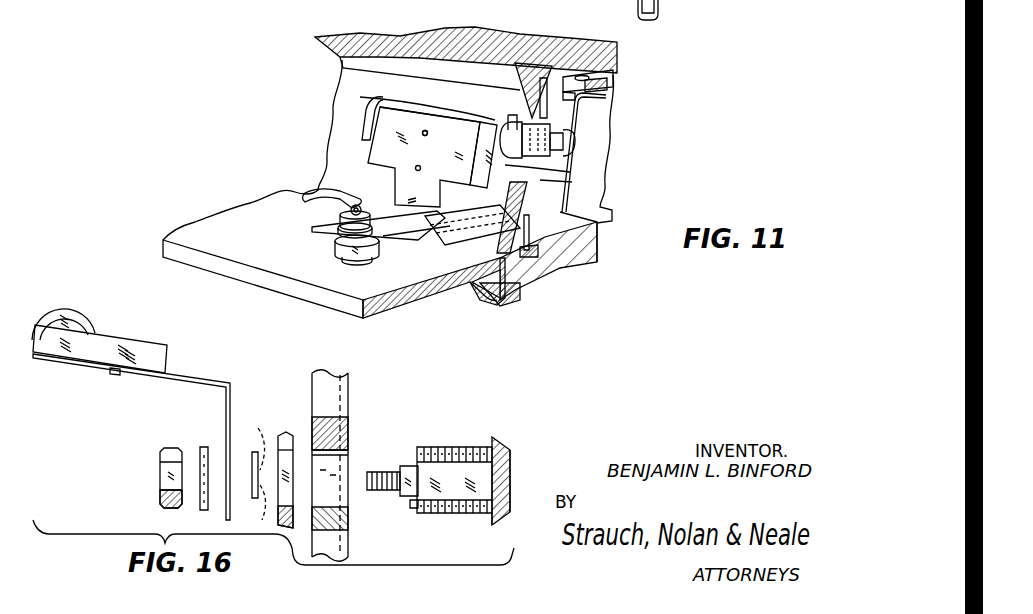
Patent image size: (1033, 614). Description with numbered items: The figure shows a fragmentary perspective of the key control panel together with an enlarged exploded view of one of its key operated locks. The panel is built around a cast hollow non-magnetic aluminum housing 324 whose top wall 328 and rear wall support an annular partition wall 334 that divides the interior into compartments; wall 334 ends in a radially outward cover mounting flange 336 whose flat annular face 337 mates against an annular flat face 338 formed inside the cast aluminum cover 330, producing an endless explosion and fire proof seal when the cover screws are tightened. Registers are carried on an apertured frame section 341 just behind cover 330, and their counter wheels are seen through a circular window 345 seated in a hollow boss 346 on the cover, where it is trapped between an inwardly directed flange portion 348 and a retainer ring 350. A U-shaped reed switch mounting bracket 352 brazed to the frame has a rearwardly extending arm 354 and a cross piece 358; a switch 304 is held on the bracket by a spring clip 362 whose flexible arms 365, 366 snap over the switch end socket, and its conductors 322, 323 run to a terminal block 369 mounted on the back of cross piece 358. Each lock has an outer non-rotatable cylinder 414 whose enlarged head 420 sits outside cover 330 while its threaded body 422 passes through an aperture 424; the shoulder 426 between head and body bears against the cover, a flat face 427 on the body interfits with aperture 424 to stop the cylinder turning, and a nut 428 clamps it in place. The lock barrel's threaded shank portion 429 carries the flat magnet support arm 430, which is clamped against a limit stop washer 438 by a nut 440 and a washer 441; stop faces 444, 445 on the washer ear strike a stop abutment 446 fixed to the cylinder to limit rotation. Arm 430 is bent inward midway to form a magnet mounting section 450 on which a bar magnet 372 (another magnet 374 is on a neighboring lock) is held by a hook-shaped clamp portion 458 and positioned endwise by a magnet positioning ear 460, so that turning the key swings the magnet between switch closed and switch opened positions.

In FIG. 11, the switch 304 is at (470, 58).
In FIG. 11, the conductor 322 is at (560, 138).
In FIG. 11, the conductor 323 is at (572, 152).
In FIG. 11, the housing 324 is at (533, 42).
In FIG. 11, the top wall 328 is at (315, 45).
In FIG. 11, the cover 330 is at (445, 300).
In FIG. 16, the cover 330 is at (320, 385).
In FIG. 11, the annular partition wall 334 is at (528, 208).
In FIG. 11, the cover mounting flange 336 is at (493, 233).
In FIG. 11, the annular face 337 is at (512, 232).
In FIG. 11, the annular flat face 338 is at (525, 243).
In FIG. 11, the frame section 341 is at (590, 230).
In FIG. 11, the window 345 is at (585, 258).
In FIG. 11, the boss 346 is at (500, 308).
In FIG. 11, the flange portion 348 is at (538, 290).
In FIG. 11, the retainer ring 350 is at (585, 248).
In FIG. 11, the reed switch mounting bracket 352 is at (583, 116).
In FIG. 11, the arm 354 is at (572, 182).
In FIG. 11, the bracket cross piece 358 is at (600, 93).
In FIG. 11, the spring clip 362 is at (570, 172).
In FIG. 11, the flexible arm 365 is at (527, 115).
In FIG. 11, the flexible arm 366 is at (485, 158).
In FIG. 11, the terminal block 369 is at (610, 82).
In FIG. 16, the bar magnet 372 is at (62, 313).
In FIG. 11, the bar magnet 374 is at (490, 131).
In FIG. 16, the cylinder 414 is at (482, 445).
In FIG. 16, the head 420 is at (505, 505).
In FIG. 11, the body 422 is at (363, 250).
In FIG. 16, the body 422 is at (468, 455).
In FIG. 16, the aperture 424 is at (346, 456).
In FIG. 16, the shoulder 426 is at (495, 518).
In FIG. 11, the flat face 427 is at (347, 243).
In FIG. 16, the flat face 427 is at (432, 480).
In FIG. 11, the nut 428 is at (275, 315).
In FIG. 11, the shank portion 429 is at (313, 207).
In FIG. 16, the shank portion 429 is at (385, 472).
In FIG. 11, the magnet support arm 430 is at (362, 155).
In FIG. 16, the magnet support arm 430 is at (82, 365).
In FIG. 16, the limit stop washer 438 is at (287, 432).
In FIG. 11, the nut 440 is at (293, 205).
In FIG. 16, the nut 440 is at (162, 450).
In FIG. 16, the washer 441 is at (206, 445).
In FIG. 16, the stop face 444 is at (250, 470).
In FIG. 16, the stop face 445 is at (263, 509).
In FIG. 16, the stop abutment 446 is at (412, 508).
In FIG. 11, the magnet mounting section 450 is at (403, 186).
In FIG. 16, the magnet mounting section 450 is at (187, 378).
In FIG. 16, the clamp portion 458 is at (88, 318).
In FIG. 11, the magnet positioning ear 460 is at (518, 175).
In FIG. 16, the magnet positioning ear 460 is at (135, 348).